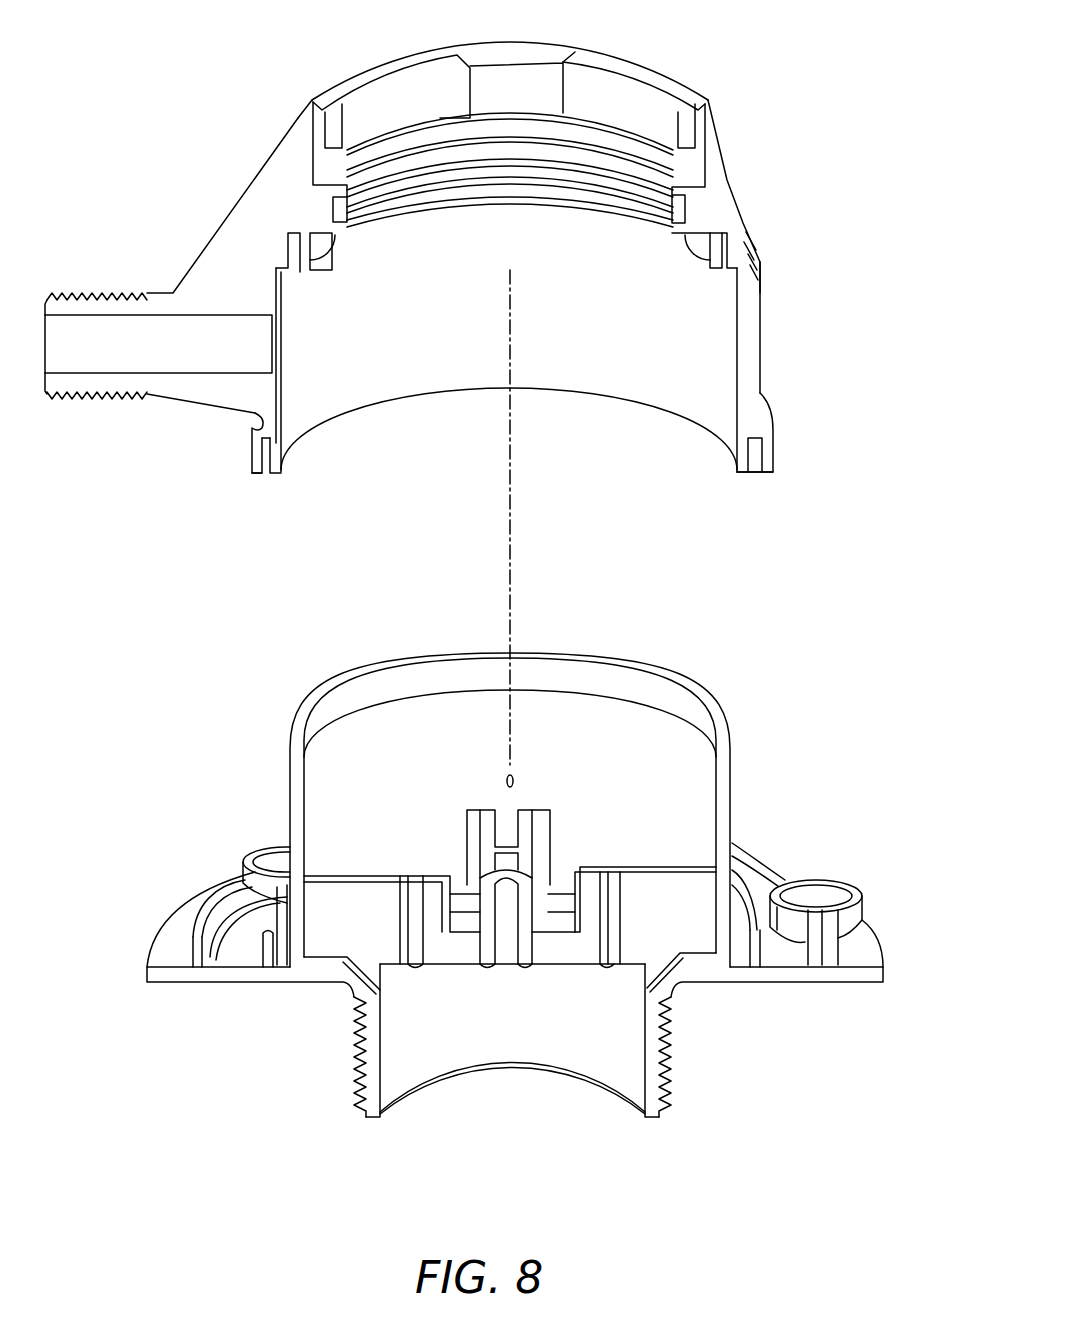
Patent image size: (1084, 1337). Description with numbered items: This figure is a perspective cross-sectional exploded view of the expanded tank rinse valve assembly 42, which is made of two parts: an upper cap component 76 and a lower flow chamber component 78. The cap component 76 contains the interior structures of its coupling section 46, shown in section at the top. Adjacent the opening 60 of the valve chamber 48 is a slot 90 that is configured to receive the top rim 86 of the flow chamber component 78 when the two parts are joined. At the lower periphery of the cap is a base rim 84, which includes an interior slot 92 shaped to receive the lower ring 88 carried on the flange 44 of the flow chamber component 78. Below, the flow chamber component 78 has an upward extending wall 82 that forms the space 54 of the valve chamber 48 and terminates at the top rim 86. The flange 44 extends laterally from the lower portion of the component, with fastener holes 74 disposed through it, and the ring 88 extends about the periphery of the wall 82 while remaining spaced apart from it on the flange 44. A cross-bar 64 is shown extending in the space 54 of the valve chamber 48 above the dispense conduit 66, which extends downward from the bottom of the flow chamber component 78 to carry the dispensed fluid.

The expanded tank rinse valve assembly 42 is at (860, 356).
The flange 44 is at (162, 985).
The coupling section 46 is at (735, 150).
The valve chamber 48 is at (782, 348).
The space 54 is at (417, 816).
The opening 60 is at (334, 232).
The cross-bar 64 is at (637, 868).
The dispense conduit 66 is at (619, 1136).
The fastener holes 74 is at (245, 864).
The cap component 76 is at (778, 99).
The flow chamber component 78 is at (868, 780).
The wall 82 is at (290, 758).
The base rim 84 is at (252, 450).
The top rim 86 is at (583, 652).
The lower ring 88 is at (257, 960).
The slot 90 is at (273, 286).
The interior slot 92 is at (268, 476).